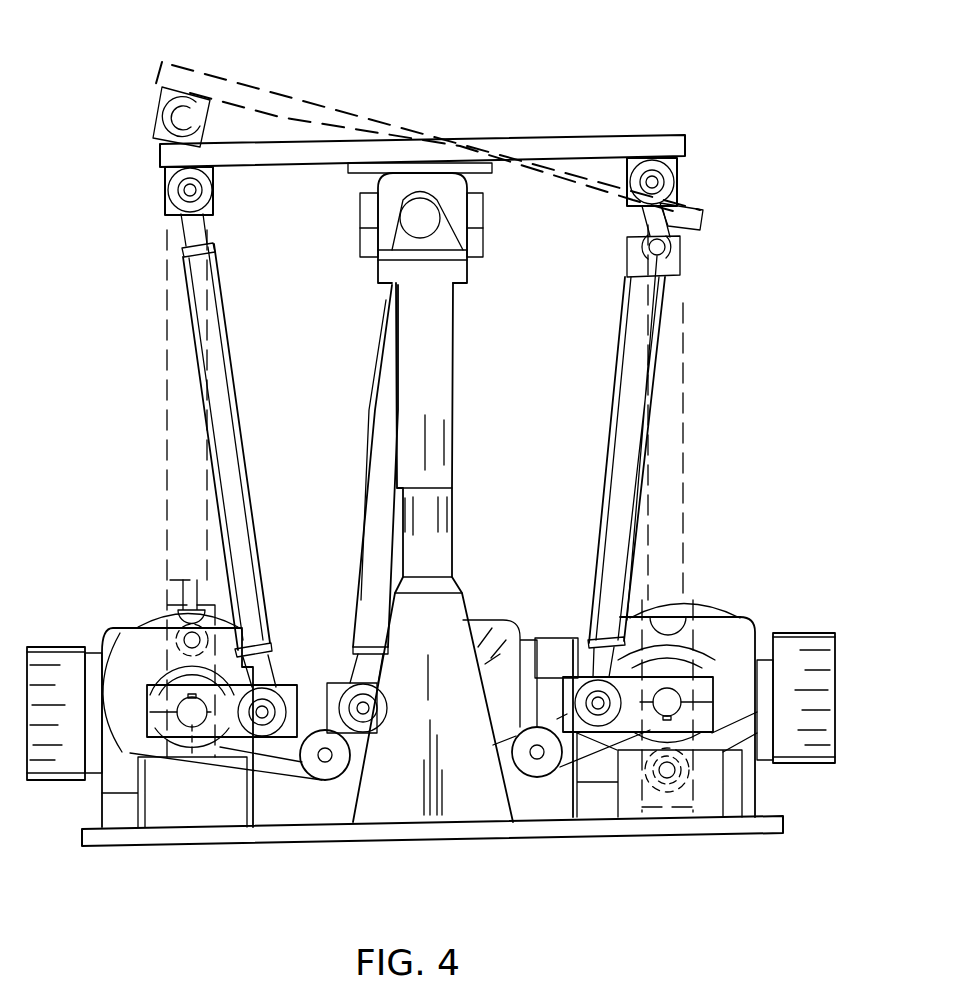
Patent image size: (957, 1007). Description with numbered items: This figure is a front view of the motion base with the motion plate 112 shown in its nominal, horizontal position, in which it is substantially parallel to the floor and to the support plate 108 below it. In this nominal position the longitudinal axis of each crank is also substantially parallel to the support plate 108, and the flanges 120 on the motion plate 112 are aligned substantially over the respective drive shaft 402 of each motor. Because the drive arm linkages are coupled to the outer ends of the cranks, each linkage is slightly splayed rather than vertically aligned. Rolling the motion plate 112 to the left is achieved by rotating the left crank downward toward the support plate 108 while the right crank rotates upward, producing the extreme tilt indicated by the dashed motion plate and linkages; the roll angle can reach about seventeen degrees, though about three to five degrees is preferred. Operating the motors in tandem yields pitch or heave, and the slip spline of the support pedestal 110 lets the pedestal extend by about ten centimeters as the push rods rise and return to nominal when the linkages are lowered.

The motion plate 112 is at (690, 141).
The flange 120 is at (678, 197).
The support pedestal 110 is at (453, 425).
The drive shaft 402 is at (186, 700).
The support plate 108 is at (732, 823).